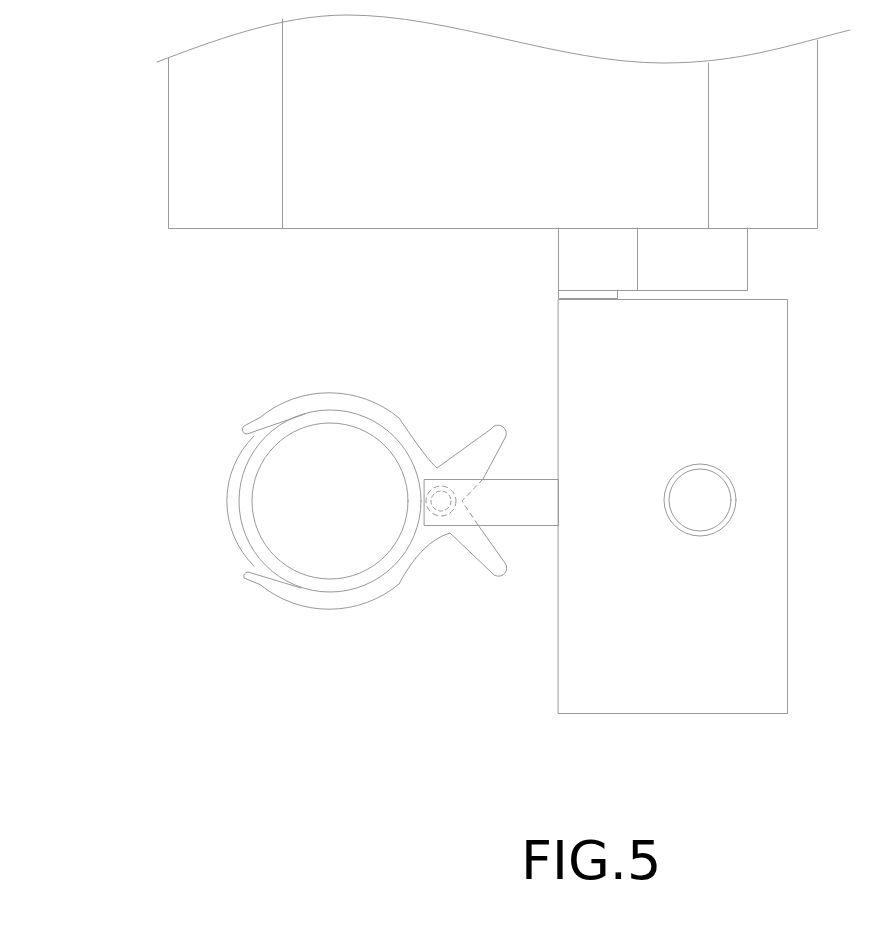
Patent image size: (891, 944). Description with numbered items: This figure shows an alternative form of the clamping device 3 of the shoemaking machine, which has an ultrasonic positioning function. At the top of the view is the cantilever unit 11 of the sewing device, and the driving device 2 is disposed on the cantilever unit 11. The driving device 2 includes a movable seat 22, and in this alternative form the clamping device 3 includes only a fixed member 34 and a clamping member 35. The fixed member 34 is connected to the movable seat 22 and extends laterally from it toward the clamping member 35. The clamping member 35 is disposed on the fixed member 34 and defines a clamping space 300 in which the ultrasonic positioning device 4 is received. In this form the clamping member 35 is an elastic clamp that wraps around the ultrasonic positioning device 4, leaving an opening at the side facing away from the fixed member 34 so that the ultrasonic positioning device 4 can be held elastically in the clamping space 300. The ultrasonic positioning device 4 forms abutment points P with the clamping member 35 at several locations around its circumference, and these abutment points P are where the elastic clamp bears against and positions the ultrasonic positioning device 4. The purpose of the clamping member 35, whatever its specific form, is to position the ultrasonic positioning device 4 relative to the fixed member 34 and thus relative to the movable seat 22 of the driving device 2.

The cantilever unit 11 is at (168, 143).
The driving device 2 is at (790, 379).
The movable seat 22 is at (590, 713).
The ultrasonic positioning device 4 is at (233, 449).
The clamping space 300 is at (220, 555).
The clamping device 3 is at (334, 512).
The clamping member 35 is at (383, 590).
The fixed member 34 is at (533, 512).
The abutment points P is at (308, 415).